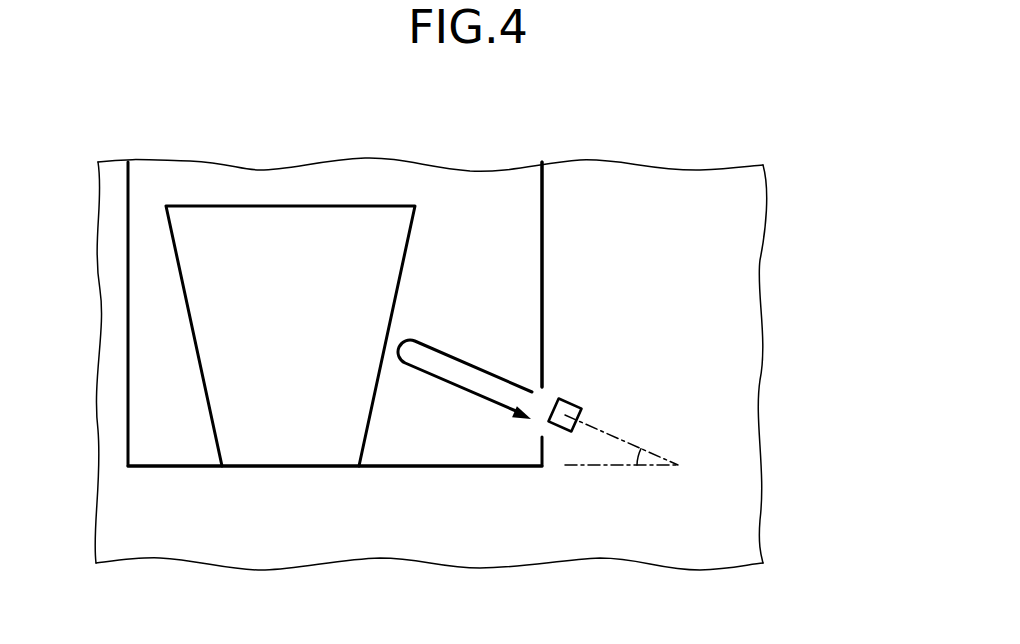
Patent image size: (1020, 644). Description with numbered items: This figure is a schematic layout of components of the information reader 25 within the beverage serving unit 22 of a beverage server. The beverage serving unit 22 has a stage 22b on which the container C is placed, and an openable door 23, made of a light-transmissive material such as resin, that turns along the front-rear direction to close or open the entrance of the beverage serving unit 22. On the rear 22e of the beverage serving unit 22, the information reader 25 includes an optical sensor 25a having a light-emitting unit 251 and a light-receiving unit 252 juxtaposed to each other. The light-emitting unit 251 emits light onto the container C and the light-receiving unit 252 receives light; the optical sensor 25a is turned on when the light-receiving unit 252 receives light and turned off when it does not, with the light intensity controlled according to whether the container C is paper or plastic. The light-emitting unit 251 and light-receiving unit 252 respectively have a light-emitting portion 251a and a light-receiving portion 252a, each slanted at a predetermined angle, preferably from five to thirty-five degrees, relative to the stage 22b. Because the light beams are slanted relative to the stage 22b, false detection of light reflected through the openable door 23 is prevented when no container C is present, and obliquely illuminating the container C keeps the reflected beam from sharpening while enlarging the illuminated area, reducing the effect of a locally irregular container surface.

The beverage serving unit 22 is at (412, 355).
The stage 22b is at (443, 463).
The rear 22e is at (548, 253).
The openable door 23 is at (125, 285).
The container C is at (415, 231).
The light-emitting unit 251 is at (717, 433).
The light-receiving unit 252 is at (717, 433).
The light-emitting portion 251a is at (734, 330).
The light-receiving portion 252a is at (558, 398).
The optical sensor 25a is at (739, 369).
The information reader 25 is at (606, 396).